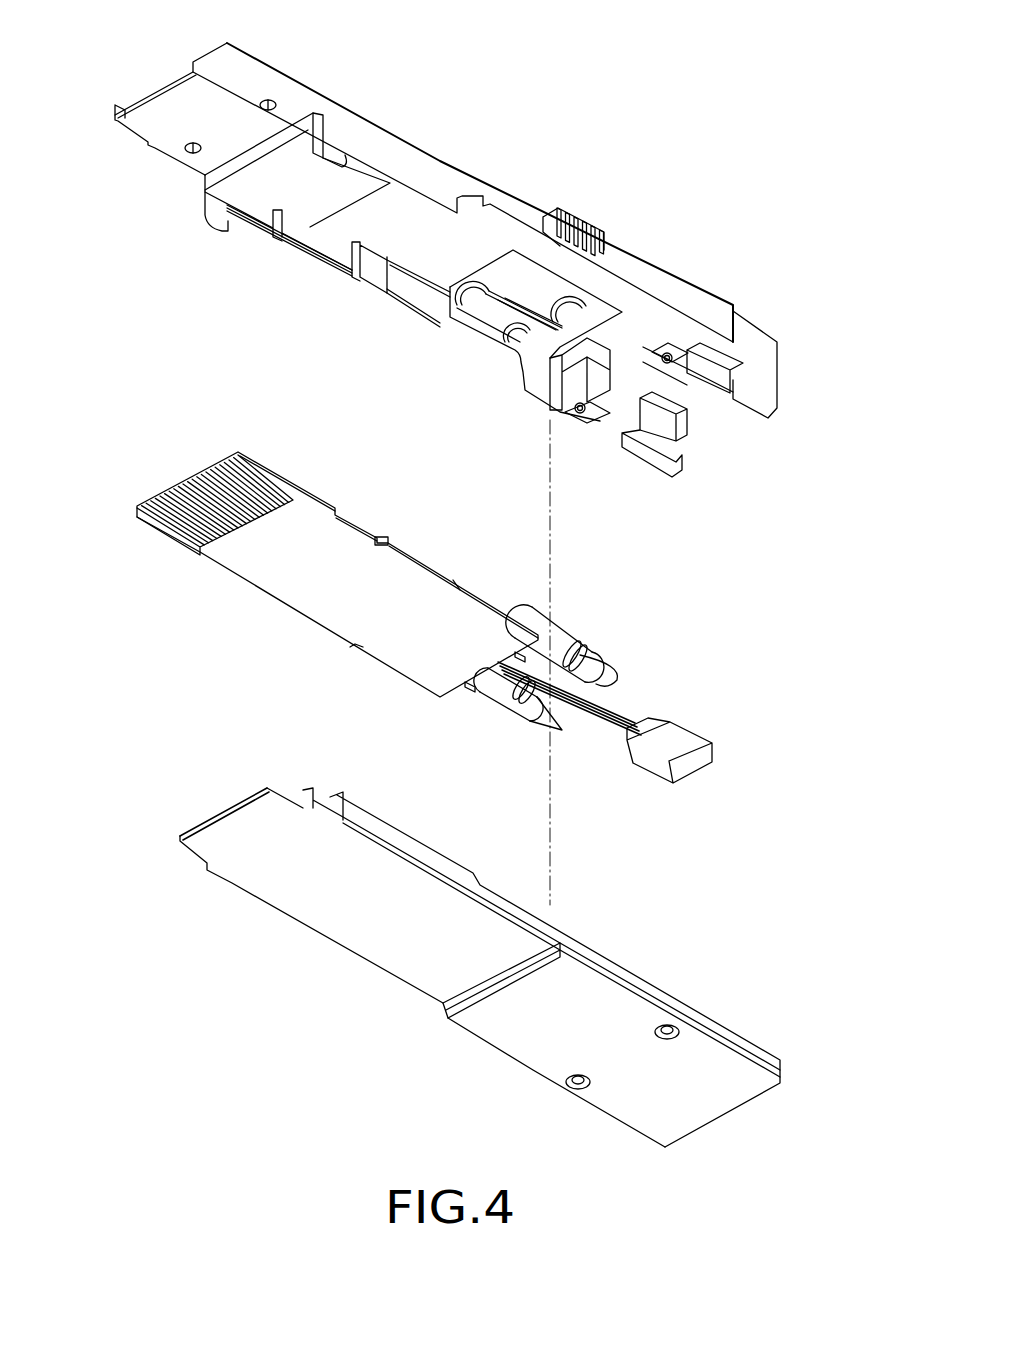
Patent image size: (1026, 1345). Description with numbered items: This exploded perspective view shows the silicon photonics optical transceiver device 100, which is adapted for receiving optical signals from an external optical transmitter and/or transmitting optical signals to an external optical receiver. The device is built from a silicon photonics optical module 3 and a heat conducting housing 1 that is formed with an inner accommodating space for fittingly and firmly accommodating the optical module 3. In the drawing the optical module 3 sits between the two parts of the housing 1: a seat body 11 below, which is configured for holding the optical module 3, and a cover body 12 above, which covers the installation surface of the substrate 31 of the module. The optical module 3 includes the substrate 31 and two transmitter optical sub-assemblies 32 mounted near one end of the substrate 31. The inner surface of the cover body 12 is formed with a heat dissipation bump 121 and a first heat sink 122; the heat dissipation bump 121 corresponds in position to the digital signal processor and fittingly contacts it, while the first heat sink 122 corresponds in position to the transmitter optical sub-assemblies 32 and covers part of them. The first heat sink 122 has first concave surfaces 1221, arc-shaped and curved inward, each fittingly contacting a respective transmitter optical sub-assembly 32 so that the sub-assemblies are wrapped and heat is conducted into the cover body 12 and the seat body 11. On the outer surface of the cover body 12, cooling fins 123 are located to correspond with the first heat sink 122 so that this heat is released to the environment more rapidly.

The silicon photonics optical transceiver device 100 is at (83, 57).
The heat conducting housing 1 is at (872, 340).
The seat body 11 is at (782, 1054).
The cover body 12 is at (780, 347).
The heat dissipation bump 121 is at (312, 193).
The first heat sink 122 is at (520, 300).
The first concave surfaces 1221 is at (562, 288).
The cooling fins 123 is at (577, 217).
The silicon photonics optical module 3 is at (172, 478).
The substrate 31 is at (308, 496).
The transmitter optical sub-assemblies 32 is at (495, 692).